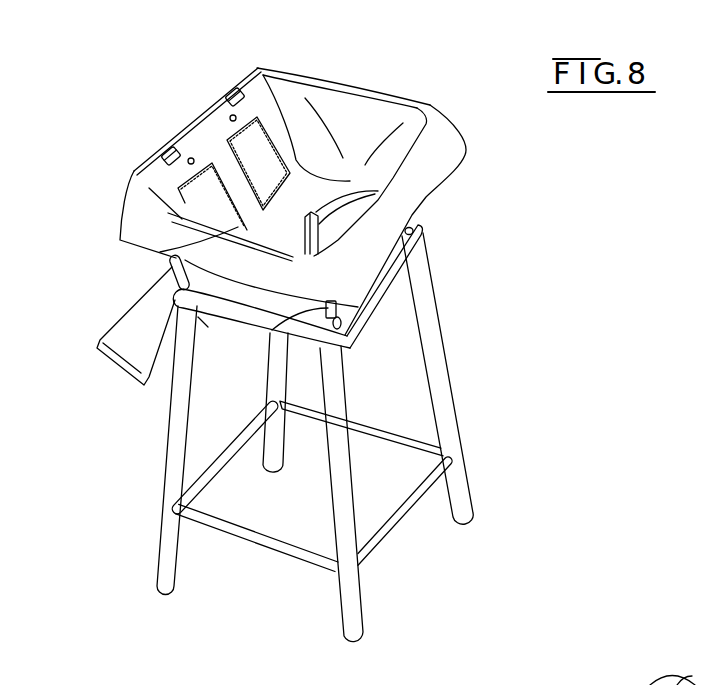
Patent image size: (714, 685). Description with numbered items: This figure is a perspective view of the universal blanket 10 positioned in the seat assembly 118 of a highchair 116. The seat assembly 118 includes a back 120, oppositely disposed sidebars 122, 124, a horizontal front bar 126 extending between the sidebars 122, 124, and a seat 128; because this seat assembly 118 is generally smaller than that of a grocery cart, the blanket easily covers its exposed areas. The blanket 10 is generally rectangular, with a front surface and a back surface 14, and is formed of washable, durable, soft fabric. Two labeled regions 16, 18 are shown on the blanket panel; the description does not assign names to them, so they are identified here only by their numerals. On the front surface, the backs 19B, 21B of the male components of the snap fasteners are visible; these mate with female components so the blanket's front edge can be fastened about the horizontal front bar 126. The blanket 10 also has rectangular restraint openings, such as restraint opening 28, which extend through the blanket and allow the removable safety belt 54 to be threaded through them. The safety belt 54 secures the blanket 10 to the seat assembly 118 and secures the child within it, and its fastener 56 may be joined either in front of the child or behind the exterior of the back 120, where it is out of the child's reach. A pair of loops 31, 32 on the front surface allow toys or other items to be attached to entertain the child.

The universal blanket 10 is at (319, 66).
The back surface 14 is at (433, 192).
The opening 16 is at (226, 202).
The opening 18 is at (276, 168).
The male component back of snap fastener 19B is at (190, 157).
The male component back of snap fastener 21B is at (231, 115).
The restraint opening 28 is at (272, 330).
The loop 31 is at (163, 155).
The loop 32 is at (228, 88).
The removable safety belt 54 is at (341, 316).
The fastener 56 is at (309, 218).
The highchair 116 is at (442, 305).
The seat assembly 118 is at (126, 300).
The back 120 is at (432, 135).
The sidebar 122 is at (172, 261).
The sidebar 124 is at (365, 94).
The horizontal front bar 126 is at (146, 170).
The seat 128 is at (307, 223).